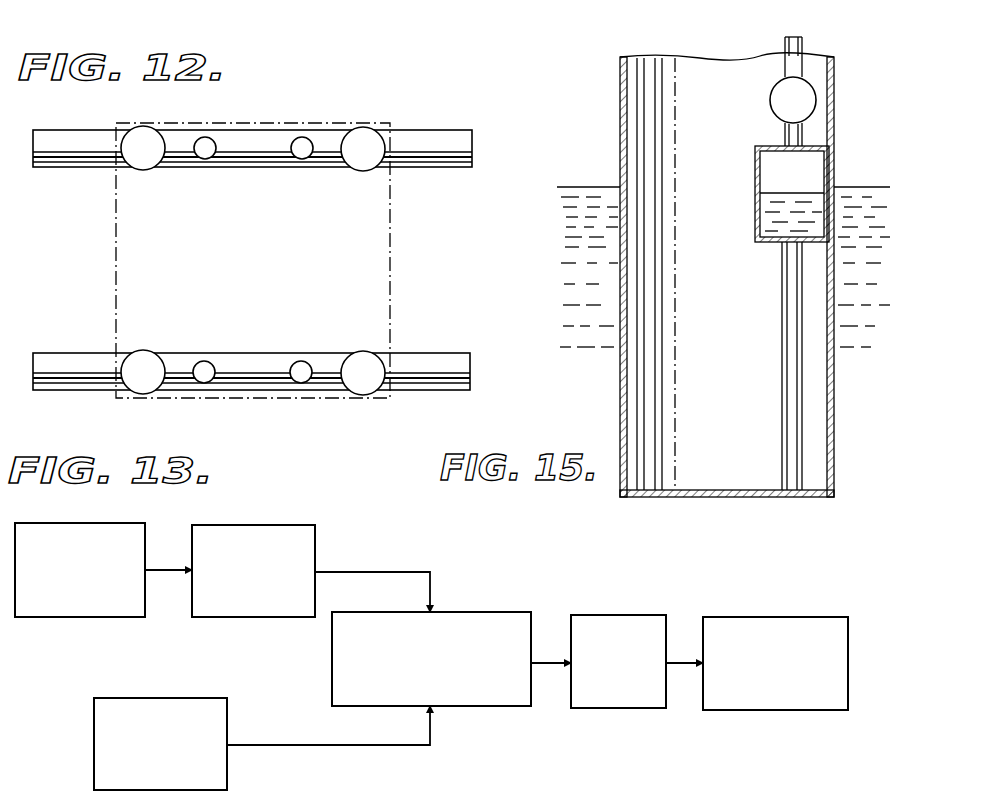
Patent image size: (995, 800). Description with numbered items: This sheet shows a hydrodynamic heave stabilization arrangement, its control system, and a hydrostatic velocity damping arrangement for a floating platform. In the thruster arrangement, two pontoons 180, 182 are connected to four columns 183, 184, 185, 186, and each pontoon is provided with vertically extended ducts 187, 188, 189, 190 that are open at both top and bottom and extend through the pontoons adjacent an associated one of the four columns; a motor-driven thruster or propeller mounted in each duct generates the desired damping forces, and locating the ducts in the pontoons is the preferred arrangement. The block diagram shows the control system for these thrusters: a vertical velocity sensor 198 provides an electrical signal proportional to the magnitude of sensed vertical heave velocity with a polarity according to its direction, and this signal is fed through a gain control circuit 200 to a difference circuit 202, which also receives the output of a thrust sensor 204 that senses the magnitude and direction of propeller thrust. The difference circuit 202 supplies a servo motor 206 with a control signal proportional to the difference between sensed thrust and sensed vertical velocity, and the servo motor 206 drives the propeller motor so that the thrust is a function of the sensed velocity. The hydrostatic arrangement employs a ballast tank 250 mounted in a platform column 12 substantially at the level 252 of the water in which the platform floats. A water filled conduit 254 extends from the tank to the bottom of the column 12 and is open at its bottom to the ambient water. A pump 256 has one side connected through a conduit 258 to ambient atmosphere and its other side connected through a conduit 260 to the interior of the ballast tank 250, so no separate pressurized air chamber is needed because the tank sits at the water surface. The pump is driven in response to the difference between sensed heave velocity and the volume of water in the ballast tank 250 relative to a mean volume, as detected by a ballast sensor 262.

In FIG. 12, the pontoon 180 is at (78, 130).
In FIG. 12, the pontoon 182 is at (78, 353).
In FIG. 12, the column 183 is at (145, 126).
In FIG. 12, the column 184 is at (363, 127).
In FIG. 12, the column 185 is at (366, 337).
In FIG. 12, the column 186 is at (143, 350).
In FIG. 12, the duct 187 is at (207, 137).
In FIG. 13, the duct 187 is at (786, 617).
In FIG. 12, the duct 188 is at (302, 137).
In FIG. 12, the duct 189 is at (300, 361).
In FIG. 12, the duct 190 is at (205, 361).
In FIG. 13, the vertical velocity sensor 198 is at (78, 523).
In FIG. 13, the gain control circuit 200 is at (256, 525).
In FIG. 13, the difference circuit 202 is at (452, 612).
In FIG. 13, the thrust sensor 204 is at (170, 698).
In FIG. 13, the servo motor 206 is at (600, 615).
In FIG. 15, the platform column 12 is at (836, 425).
In FIG. 15, the ballast tank 250 is at (755, 176).
In FIG. 15, the level of water 252 is at (598, 187).
In FIG. 15, the water filled conduit 254 is at (782, 381).
In FIG. 15, the pump 256 is at (771, 96).
In FIG. 15, the conduit 258 is at (806, 50).
In FIG. 15, the conduit 260 is at (784, 130).
In FIG. 15, the ballast sensor 262 is at (835, 178).